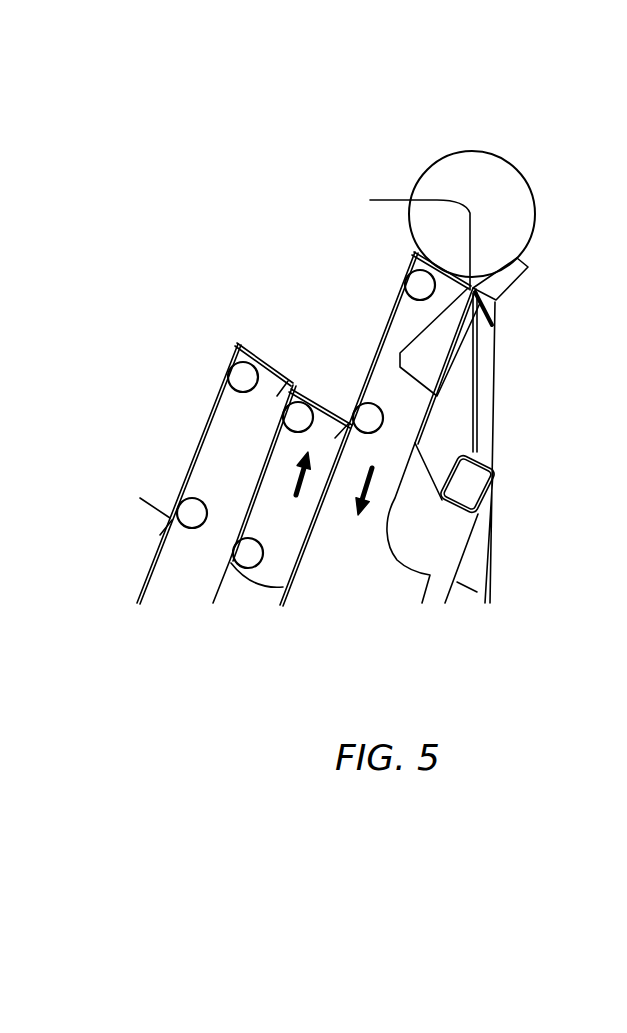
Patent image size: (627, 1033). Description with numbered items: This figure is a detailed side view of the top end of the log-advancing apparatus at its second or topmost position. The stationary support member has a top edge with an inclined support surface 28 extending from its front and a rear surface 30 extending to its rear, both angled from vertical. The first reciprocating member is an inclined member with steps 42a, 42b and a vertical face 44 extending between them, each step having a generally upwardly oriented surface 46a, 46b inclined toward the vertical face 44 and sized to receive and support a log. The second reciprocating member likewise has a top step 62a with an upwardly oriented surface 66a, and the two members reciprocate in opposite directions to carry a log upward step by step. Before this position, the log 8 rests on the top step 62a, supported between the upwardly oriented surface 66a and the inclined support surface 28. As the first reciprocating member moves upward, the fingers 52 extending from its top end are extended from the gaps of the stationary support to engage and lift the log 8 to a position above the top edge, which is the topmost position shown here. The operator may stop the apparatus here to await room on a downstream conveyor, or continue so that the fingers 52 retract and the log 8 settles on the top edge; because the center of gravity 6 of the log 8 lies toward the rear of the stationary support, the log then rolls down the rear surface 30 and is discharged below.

The log 8 is at (493, 154).
The center of gravity 6 is at (370, 200).
The vertical face 44 is at (400, 287).
The upwardly oriented surface 46a is at (446, 262).
The inclined support surface 28 is at (443, 313).
The fingers 52 is at (502, 286).
The rear surface 30 is at (495, 308).
The upwardly oriented surface 46b is at (267, 357).
The upwardly oriented surface 66a is at (321, 400).
The step 42a is at (374, 399).
The step 42b is at (216, 453).
The top step 62a is at (298, 454).